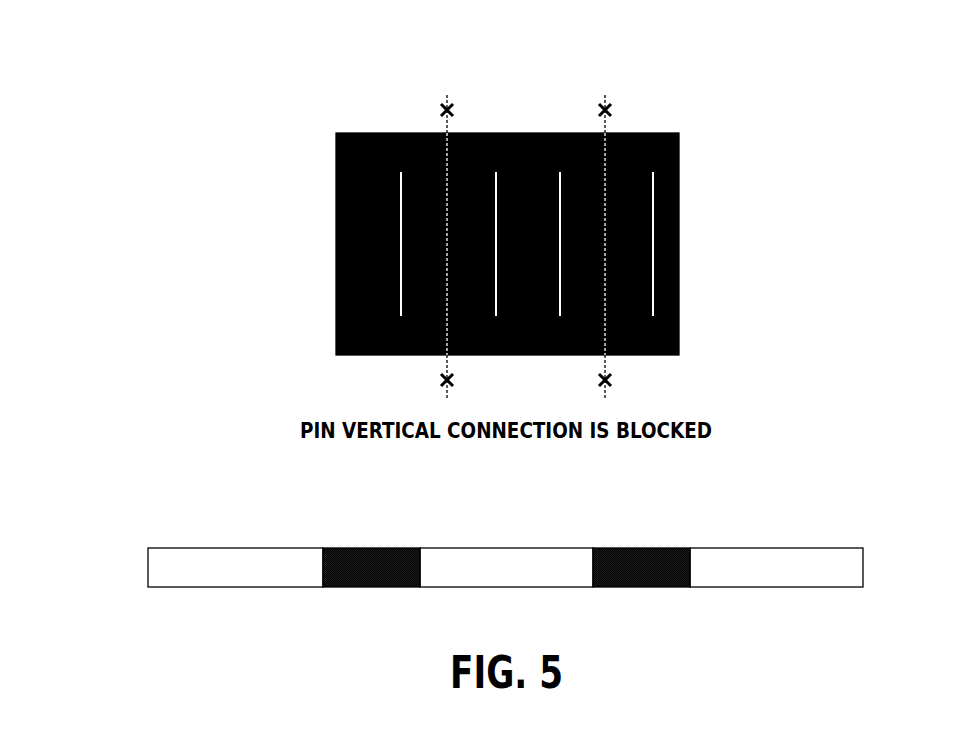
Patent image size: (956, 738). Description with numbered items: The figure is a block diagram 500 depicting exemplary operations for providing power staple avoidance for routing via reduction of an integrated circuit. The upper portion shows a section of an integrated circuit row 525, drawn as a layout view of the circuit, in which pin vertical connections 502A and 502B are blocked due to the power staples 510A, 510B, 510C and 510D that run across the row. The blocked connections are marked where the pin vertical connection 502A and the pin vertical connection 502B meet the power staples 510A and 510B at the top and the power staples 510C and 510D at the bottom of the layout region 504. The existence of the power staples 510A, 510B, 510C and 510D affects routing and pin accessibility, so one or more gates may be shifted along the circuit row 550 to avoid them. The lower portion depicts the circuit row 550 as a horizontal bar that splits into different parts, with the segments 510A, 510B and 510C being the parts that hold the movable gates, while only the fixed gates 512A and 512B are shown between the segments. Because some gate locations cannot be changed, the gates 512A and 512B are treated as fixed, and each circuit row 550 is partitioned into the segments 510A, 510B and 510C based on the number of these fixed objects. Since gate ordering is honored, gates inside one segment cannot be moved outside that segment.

The block diagram 500 is at (169, 67).
The pin vertical connection 502A is at (447, 95).
The pin vertical connection 502B is at (605, 95).
The cell layout 504 is at (679, 225).
The power staple 510A is at (483, 132).
The power staple 510B is at (650, 115).
The power staple 510C is at (418, 357).
The power staple 510D is at (573, 357).
The fixed gate 512A is at (383, 547).
The fixed gate 512B is at (652, 547).
The integrated circuit row 525 is at (238, 230).
The circuit row 550 is at (126, 573).